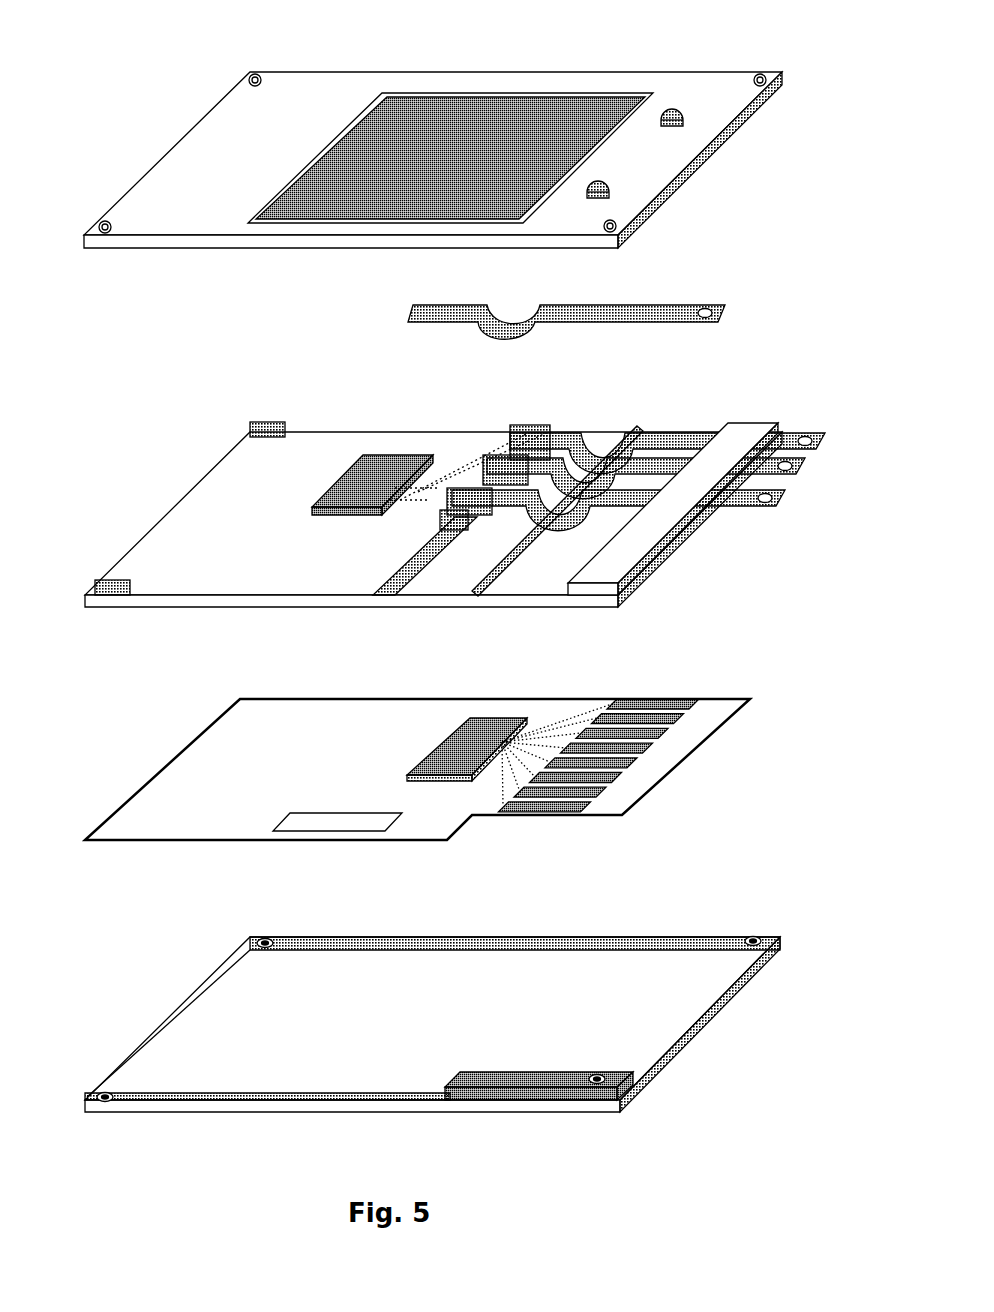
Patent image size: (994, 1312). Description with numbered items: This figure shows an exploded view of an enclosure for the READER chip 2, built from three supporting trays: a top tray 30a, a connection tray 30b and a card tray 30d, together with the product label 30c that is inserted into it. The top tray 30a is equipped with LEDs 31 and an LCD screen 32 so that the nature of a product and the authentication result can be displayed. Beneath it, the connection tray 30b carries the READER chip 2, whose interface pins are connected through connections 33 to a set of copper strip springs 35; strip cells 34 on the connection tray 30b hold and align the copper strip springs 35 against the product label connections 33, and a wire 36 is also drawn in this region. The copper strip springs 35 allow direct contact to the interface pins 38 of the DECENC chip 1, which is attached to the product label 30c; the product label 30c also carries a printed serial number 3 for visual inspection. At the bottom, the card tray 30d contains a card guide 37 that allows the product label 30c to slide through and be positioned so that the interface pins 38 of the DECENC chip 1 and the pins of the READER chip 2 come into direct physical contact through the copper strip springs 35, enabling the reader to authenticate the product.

The top tray 30a is at (202, 175).
The LCD screen 32 is at (488, 123).
The LEDs 31 is at (610, 166).
The copper strip springs 35 is at (398, 316).
The connection tray 30b is at (235, 492).
The READER chip 2 is at (367, 470).
The connections 33 is at (463, 463).
The strip cells 34 is at (568, 436).
The wire 36 is at (640, 428).
The product label 30c is at (255, 730).
The DECENC chip 1 is at (463, 720).
The interface pins 38 is at (632, 728).
The printed serial number 3 is at (382, 831).
The card tray 30d is at (237, 1002).
The card guide 37 is at (627, 1085).